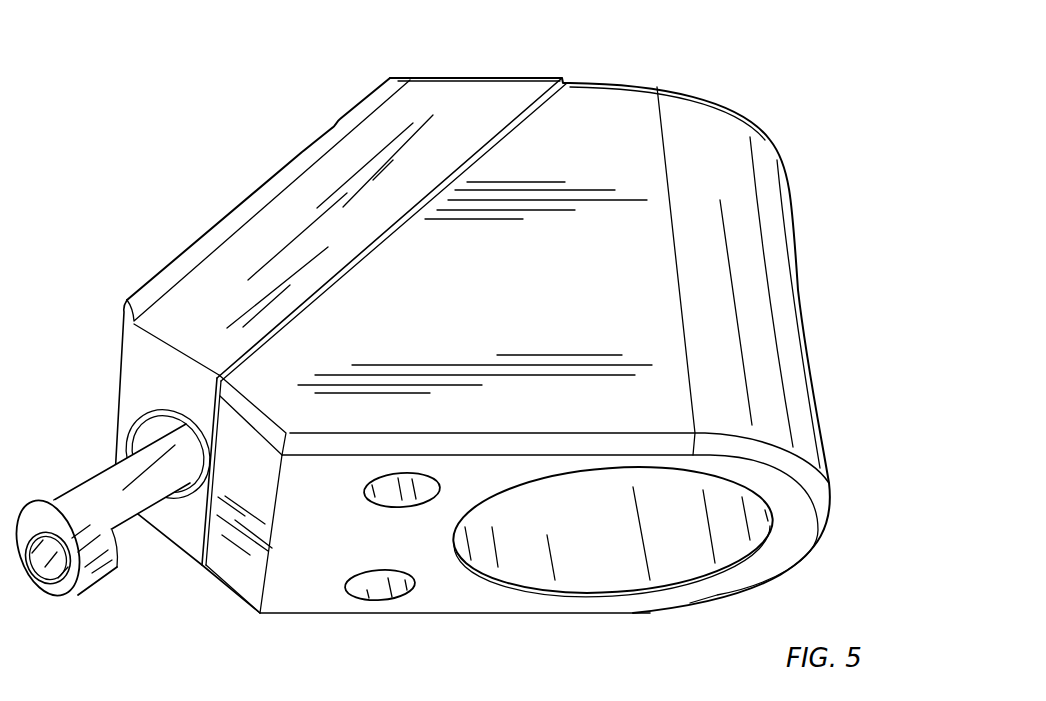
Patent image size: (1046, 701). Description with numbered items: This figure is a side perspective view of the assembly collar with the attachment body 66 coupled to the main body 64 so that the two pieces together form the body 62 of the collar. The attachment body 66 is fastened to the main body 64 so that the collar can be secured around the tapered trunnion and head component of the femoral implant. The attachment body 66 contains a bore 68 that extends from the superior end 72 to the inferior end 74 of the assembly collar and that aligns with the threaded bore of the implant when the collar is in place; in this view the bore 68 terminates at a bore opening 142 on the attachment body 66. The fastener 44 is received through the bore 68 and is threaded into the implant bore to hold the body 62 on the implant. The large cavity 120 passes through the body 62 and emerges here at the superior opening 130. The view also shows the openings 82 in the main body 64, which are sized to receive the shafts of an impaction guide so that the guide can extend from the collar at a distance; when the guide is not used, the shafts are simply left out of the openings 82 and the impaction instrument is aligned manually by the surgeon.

The fastener 44 is at (44, 527).
The body 62 is at (766, 230).
The main body 64 is at (793, 338).
The attachment body 66 is at (222, 246).
The bore 68 is at (132, 437).
The superior end 72 is at (191, 584).
The inferior end 74 is at (583, 72).
The openings 82 is at (422, 491).
The cavity 120 is at (577, 562).
The superior opening 130 is at (725, 537).
The bore opening 142 is at (134, 418).